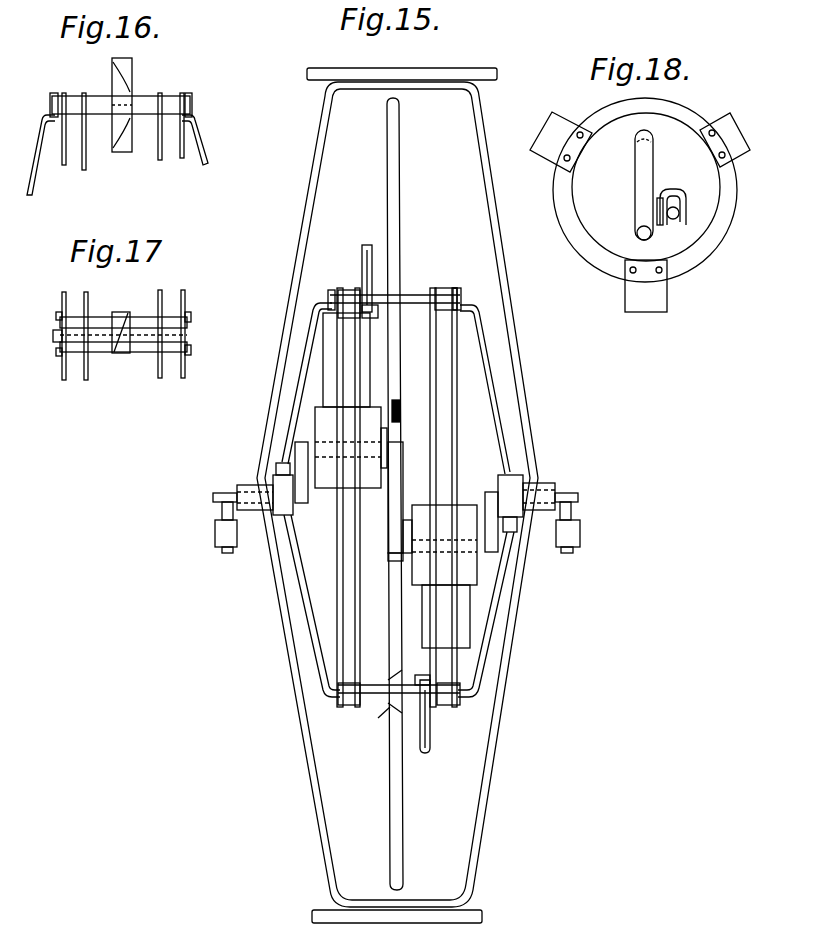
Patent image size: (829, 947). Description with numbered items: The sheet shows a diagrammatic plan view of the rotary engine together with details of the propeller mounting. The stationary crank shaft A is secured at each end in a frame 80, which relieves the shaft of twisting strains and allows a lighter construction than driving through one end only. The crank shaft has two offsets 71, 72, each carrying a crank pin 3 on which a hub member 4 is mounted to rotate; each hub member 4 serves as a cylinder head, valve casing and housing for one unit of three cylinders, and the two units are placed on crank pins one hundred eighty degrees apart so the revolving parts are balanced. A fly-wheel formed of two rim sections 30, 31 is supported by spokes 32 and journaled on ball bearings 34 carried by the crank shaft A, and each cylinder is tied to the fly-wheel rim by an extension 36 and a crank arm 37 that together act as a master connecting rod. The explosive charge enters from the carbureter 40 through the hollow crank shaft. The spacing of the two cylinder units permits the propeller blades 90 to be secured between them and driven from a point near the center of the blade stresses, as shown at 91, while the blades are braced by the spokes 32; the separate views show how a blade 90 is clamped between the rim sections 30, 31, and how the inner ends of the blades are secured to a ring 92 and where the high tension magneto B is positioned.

In FIG. 15, the frame 80 is at (402, 494).
In FIG. 15, the propeller blade 90 is at (392, 285).
In FIG. 16, the propeller blade 90 is at (130, 92).
In FIG. 17, the propeller blade 90 is at (125, 321).
In FIG. 18, the propeller blade 90 is at (648, 212).
In FIG. 15, the blade support point 91 is at (417, 298).
In FIG. 15, the ring 92 is at (400, 580).
In FIG. 18, the ring 92 is at (645, 185).
In FIG. 15, the rim section 30 is at (378, 497).
In FIG. 16, the rim section 30 is at (106, 143).
In FIG. 17, the rim section 30 is at (108, 348).
In FIG. 15, the rim section 31 is at (411, 497).
In FIG. 16, the rim section 31 is at (139, 143).
In FIG. 17, the rim section 31 is at (142, 348).
In FIG. 15, the spoke 32 is at (474, 705).
In FIG. 16, the spoke 32 is at (126, 155).
In FIG. 15, the ball bearing 34 is at (262, 484).
In FIG. 15, the extension 36 is at (371, 254).
In FIG. 15, the crank arm 37 is at (362, 258).
In FIG. 15, the hub member 4 is at (394, 480).
In FIG. 15, the crank shaft offset 71 is at (389, 448).
In FIG. 15, the crank shaft offset 72 is at (488, 495).
In FIG. 15, the carbureter 40 is at (585, 534).
In FIG. 15, the crank pin 3 is at (381, 560).
In FIG. 15, the stationary crank shaft A is at (587, 499).
In FIG. 18, the stationary crank shaft A is at (650, 186).
In FIG. 18, the high tension magneto B is at (686, 210).